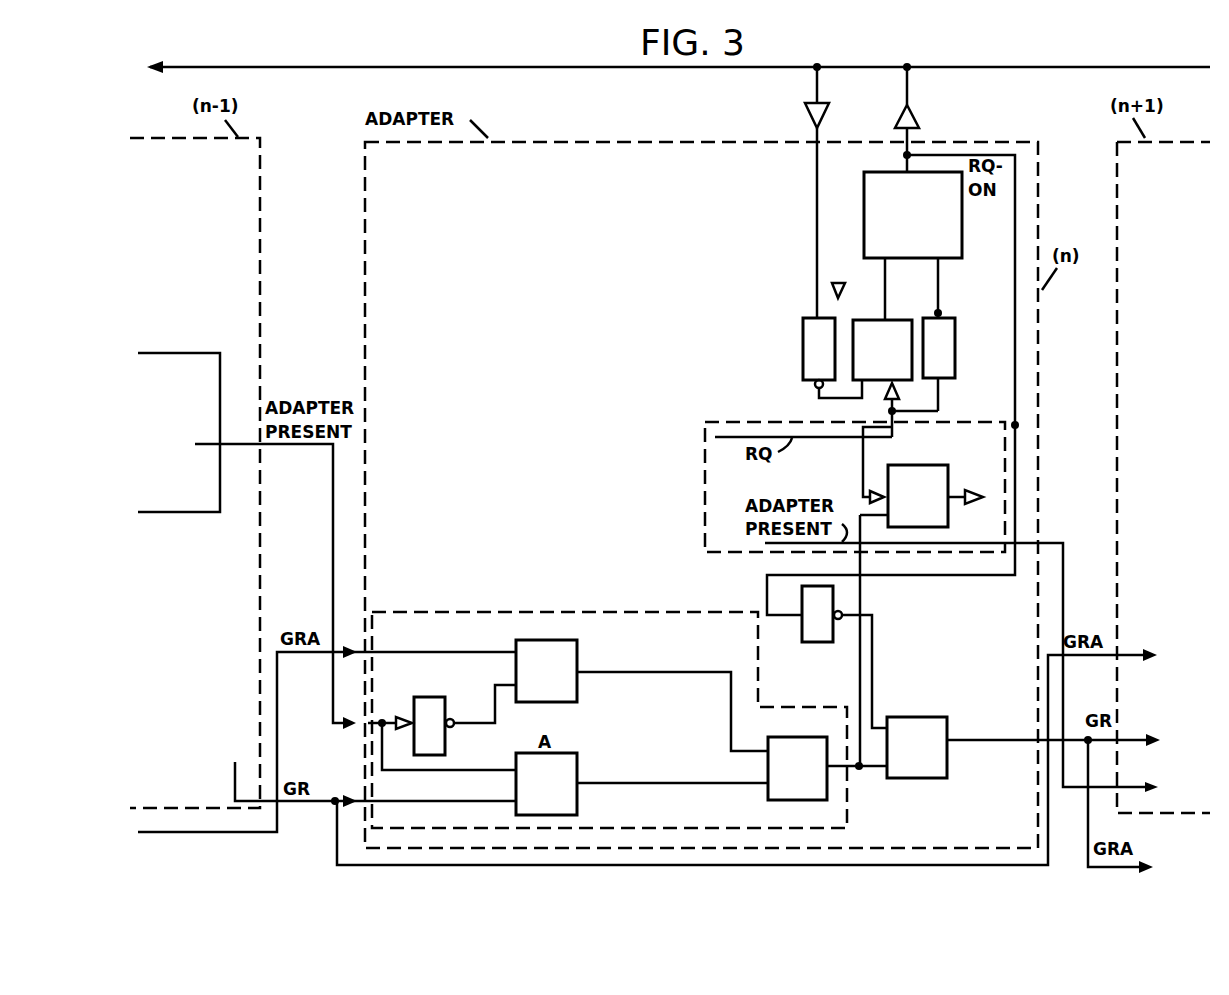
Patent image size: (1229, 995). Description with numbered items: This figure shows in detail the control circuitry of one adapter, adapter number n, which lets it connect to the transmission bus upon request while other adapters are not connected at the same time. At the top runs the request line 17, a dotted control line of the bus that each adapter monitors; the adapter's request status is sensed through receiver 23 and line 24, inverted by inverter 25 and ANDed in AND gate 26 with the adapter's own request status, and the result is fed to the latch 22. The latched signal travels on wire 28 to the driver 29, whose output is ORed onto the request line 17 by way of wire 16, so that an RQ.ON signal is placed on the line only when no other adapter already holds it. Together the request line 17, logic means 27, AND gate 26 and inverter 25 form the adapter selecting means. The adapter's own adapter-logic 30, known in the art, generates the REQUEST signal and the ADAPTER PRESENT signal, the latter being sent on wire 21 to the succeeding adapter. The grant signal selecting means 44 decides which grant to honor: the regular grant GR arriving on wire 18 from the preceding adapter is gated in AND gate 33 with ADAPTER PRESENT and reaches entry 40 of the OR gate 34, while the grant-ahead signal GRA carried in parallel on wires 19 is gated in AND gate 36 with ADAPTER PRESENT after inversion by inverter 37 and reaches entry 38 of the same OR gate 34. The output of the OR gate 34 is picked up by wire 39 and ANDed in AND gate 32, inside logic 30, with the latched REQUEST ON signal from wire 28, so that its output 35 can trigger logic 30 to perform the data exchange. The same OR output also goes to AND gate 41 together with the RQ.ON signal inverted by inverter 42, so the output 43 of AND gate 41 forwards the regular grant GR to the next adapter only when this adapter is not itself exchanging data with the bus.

The wire 16 is at (910, 94).
The request line 17 is at (1008, 68).
The wire 18 is at (292, 803).
The wires 19 is at (333, 843).
The wire 21 is at (337, 492).
The latch 22 is at (963, 238).
The receiver 23 is at (808, 112).
The line 24 is at (817, 222).
The inverter 25 is at (803, 357).
The AND gate 26 is at (896, 318).
The logic means 27 is at (839, 282).
The wire 28 is at (1010, 380).
The driver 29 is at (920, 120).
The adapter-logic 30 is at (697, 455).
The AND gate 32 is at (948, 480).
The AND gate 33 is at (577, 760).
The OR gate 34 is at (798, 738).
The output 35 is at (958, 500).
The AND gate 36 is at (577, 653).
The inverter 37 is at (418, 700).
The entry 38 is at (733, 712).
The wire 39 is at (857, 660).
The entry 40 is at (675, 782).
The AND gate 41 is at (950, 717).
The inverter 42 is at (818, 643).
The output 43 is at (1128, 737).
The grant signal selecting means 44 is at (528, 612).